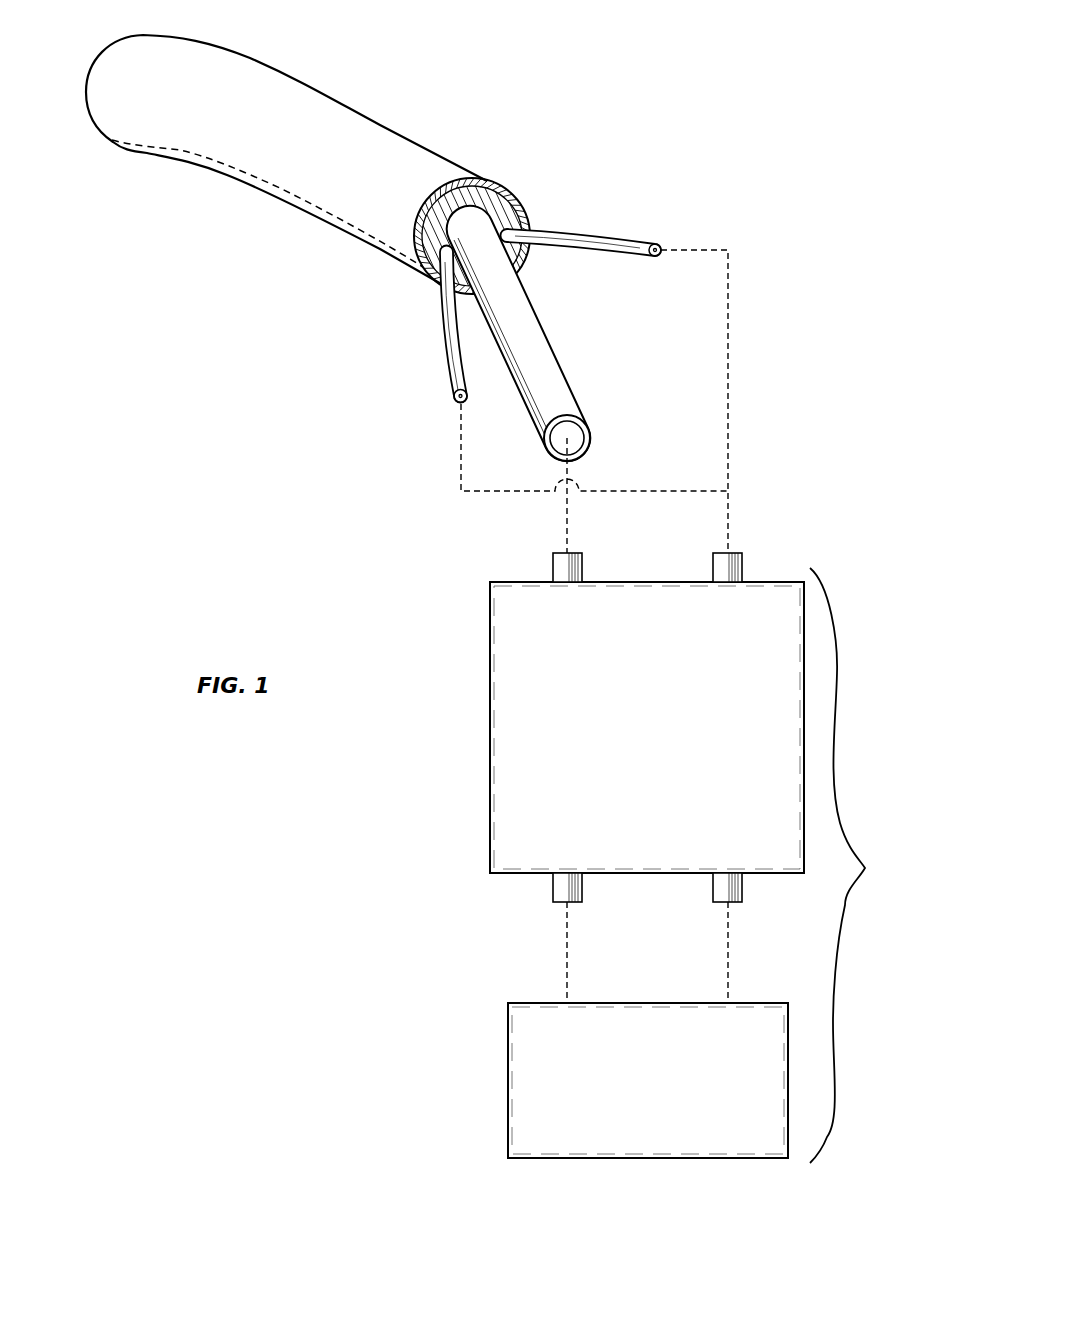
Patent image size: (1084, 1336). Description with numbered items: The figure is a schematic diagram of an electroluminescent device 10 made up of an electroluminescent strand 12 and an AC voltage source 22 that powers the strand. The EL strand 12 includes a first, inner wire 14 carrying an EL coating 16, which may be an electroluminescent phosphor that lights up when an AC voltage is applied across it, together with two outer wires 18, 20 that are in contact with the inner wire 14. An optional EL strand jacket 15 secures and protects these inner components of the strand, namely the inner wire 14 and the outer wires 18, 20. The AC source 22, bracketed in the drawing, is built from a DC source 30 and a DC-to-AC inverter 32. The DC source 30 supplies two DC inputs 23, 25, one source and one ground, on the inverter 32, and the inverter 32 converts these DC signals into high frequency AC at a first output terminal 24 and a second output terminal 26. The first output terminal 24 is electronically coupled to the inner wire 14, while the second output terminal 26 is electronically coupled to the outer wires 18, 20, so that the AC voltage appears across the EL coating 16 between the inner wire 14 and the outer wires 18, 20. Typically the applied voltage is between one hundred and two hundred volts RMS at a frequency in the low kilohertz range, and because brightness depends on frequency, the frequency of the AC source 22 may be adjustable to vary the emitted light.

The electroluminescent device 10 is at (704, 101).
The electroluminescent strand 12 is at (391, 103).
The inner wire 14 is at (575, 438).
The EL strand jacket 15 is at (462, 181).
The EL coating 16 is at (542, 322).
The outer wire 18 is at (452, 363).
The outer wire 20 is at (558, 237).
The AC voltage source 22 is at (853, 865).
The DC input 23 is at (552, 888).
The first output terminal 24 is at (552, 568).
The DC input 25 is at (743, 887).
The second output terminal 26 is at (743, 567).
The DC source 30 is at (508, 1082).
The DC-to-AC inverter 32 is at (490, 728).